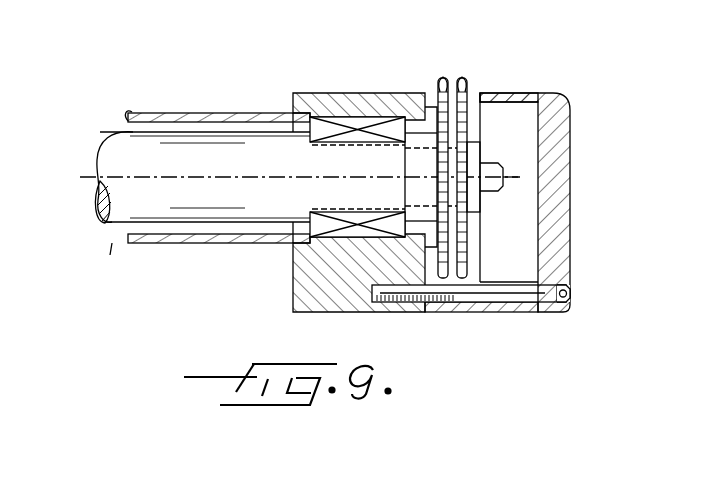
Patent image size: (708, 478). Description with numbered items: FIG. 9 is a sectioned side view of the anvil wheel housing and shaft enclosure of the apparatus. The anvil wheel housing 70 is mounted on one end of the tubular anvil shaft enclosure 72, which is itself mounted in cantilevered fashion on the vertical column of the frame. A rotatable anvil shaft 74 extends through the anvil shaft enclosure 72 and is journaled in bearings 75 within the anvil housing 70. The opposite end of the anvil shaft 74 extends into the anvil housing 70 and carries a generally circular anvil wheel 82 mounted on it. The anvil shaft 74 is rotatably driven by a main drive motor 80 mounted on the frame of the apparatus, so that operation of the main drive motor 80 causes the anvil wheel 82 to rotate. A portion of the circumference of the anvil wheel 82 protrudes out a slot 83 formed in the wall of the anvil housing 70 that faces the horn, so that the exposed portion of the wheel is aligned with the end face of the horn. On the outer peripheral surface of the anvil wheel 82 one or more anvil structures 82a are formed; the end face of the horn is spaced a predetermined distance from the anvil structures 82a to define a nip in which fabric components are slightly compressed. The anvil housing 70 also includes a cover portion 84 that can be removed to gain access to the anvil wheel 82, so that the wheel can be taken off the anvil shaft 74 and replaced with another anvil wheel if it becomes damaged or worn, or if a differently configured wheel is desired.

The anvil wheel housing 70 is at (292, 288).
The anvil shaft enclosure 72 is at (176, 245).
The anvil shaft 74 is at (122, 189).
The bearings 75 is at (359, 117).
The main drive motor 80 is at (16, 8).
The anvil wheel 82 is at (468, 240).
The anvil structures 82a is at (463, 77).
The slot 83 is at (479, 100).
The cover portion 84 is at (572, 119).